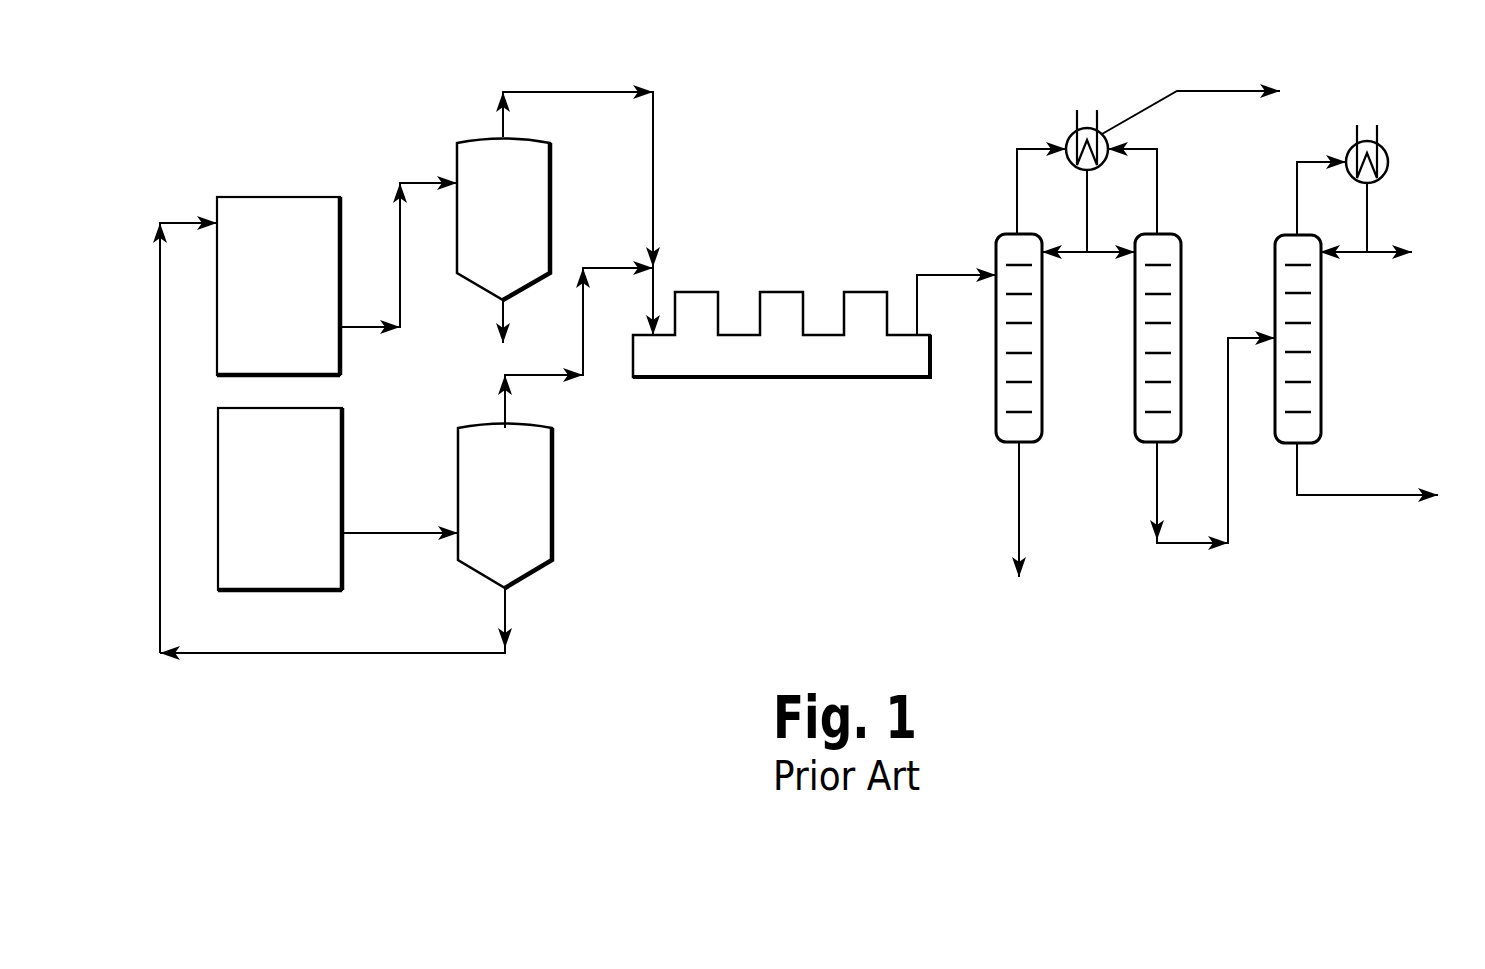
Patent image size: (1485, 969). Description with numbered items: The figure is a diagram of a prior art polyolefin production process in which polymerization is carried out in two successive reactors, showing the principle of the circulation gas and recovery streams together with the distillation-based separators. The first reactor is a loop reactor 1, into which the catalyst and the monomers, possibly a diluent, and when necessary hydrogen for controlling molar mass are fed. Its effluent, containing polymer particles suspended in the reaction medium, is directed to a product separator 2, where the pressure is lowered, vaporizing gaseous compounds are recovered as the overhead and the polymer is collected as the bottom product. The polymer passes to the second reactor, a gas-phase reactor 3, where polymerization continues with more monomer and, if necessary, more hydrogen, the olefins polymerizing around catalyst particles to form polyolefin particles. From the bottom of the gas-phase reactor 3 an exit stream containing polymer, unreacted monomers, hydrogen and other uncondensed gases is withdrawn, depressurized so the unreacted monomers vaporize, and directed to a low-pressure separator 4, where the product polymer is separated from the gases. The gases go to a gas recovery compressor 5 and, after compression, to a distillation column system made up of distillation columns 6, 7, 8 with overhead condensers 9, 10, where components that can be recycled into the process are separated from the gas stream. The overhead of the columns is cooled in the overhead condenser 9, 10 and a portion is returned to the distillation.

The loop reactor 1 is at (296, 488).
The product separator 2 is at (494, 481).
The gas-phase reactor 3 is at (291, 271).
The low-pressure separator 4 is at (490, 198).
The gas recovery compressor 5 is at (713, 363).
The distillation column 6 is at (1003, 420).
The distillation column 7 is at (1145, 408).
The distillation column 8 is at (1313, 403).
The overhead condenser 9 is at (1068, 141).
The overhead condenser 10 is at (1388, 162).